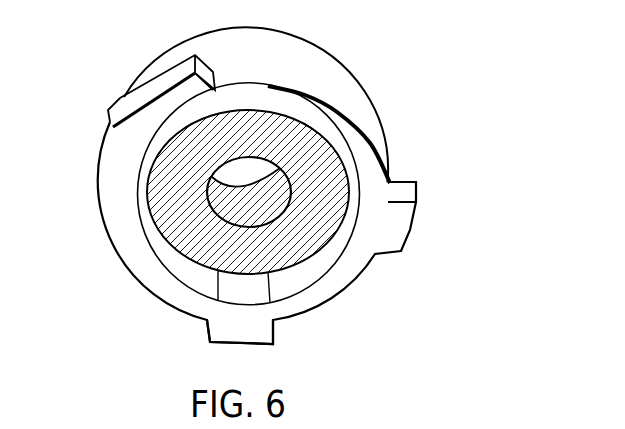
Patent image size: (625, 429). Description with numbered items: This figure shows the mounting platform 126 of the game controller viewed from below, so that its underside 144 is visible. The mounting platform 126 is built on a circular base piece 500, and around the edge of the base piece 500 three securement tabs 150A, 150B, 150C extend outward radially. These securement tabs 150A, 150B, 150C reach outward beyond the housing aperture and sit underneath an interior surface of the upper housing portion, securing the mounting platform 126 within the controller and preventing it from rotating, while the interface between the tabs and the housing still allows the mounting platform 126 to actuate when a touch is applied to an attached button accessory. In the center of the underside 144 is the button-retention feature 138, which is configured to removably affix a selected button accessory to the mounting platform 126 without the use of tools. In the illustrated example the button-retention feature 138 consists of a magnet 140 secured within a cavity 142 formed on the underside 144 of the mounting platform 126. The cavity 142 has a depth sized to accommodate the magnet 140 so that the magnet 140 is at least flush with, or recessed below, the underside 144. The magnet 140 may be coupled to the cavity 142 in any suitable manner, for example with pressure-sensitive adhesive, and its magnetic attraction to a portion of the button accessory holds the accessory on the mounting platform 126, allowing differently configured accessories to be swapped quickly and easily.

The mounting platform 126 is at (452, 34).
The button-retention feature 138 is at (320, 157).
The magnet 140 is at (260, 112).
The cavity 142 is at (181, 262).
The underside 144 is at (338, 291).
The securement tab 150A is at (413, 230).
The securement tab 150B is at (120, 98).
The securement tab 150C is at (240, 344).
The base piece 500 is at (217, 45).